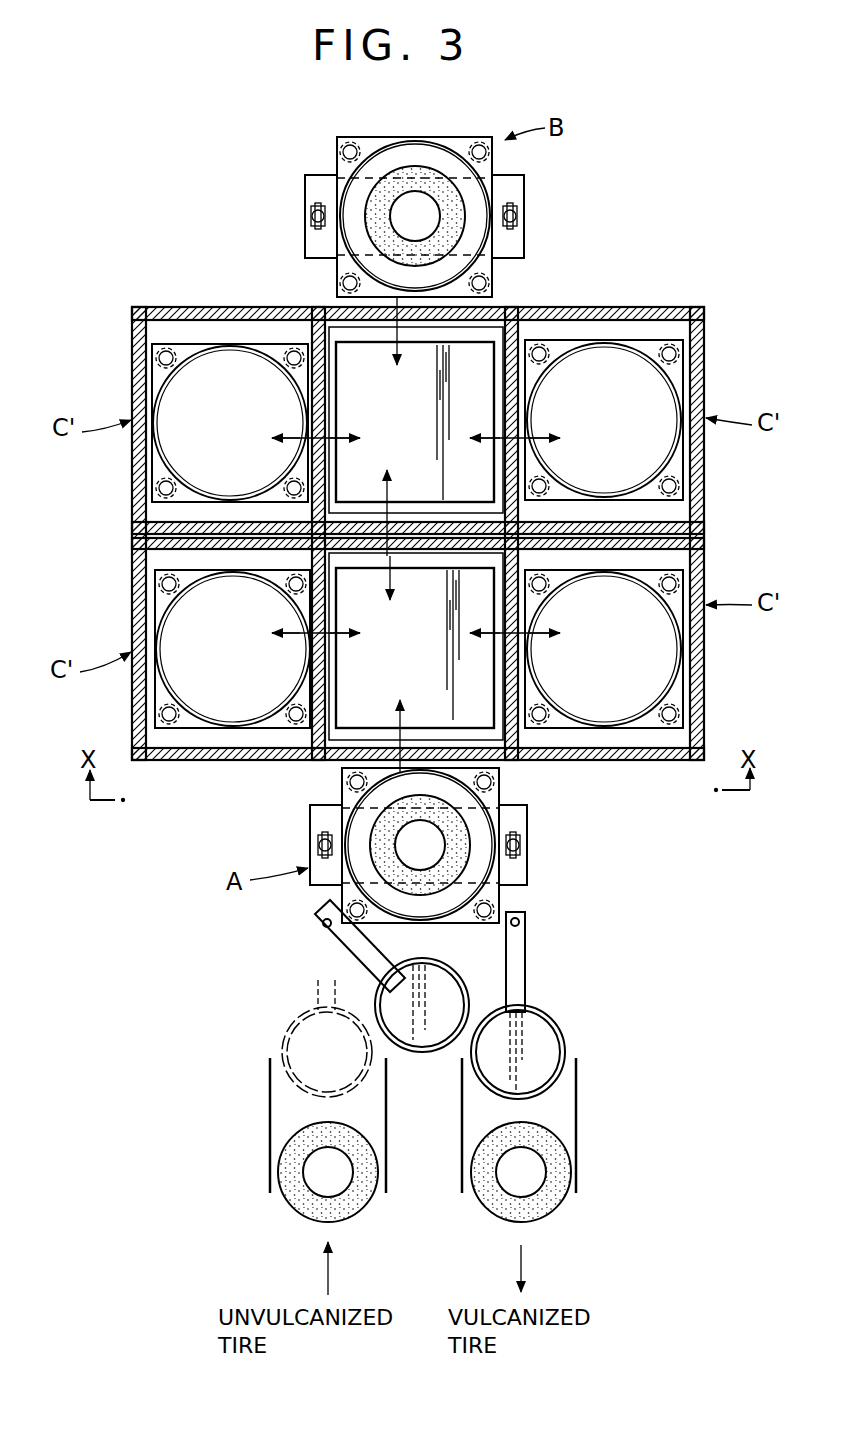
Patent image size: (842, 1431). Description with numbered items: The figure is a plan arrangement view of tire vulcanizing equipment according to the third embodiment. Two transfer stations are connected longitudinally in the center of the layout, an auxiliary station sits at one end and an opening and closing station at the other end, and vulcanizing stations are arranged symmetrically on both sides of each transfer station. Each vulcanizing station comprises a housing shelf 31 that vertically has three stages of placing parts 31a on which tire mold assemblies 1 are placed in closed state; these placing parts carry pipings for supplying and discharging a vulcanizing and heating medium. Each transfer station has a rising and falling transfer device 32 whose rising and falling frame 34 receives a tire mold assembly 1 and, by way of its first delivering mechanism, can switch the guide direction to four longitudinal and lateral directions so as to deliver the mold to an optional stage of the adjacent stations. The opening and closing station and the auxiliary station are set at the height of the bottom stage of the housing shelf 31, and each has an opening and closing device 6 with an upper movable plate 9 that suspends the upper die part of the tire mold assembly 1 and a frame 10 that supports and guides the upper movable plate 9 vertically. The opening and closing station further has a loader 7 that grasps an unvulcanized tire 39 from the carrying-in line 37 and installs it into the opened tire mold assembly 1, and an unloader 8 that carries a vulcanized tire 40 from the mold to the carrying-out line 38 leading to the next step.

The tire mold assembly 1 is at (485, 255).
The opening and closing device 6 is at (527, 180).
The upper movable plate 9 is at (468, 185).
The frame 10 is at (305, 180).
The housing shelf 31 is at (133, 506).
The placing part 31a is at (190, 330).
The rising and falling transfer device 32 is at (300, 315).
The rising and falling frame 34 is at (485, 350).
The carrying-in line 37 is at (272, 1114).
The carrying-out line 38 is at (570, 1118).
The unvulcanized tire 39 is at (302, 1205).
The vulcanized tire 40 is at (408, 185).
The loader 7 is at (385, 995).
The unloader 8 is at (540, 1040).